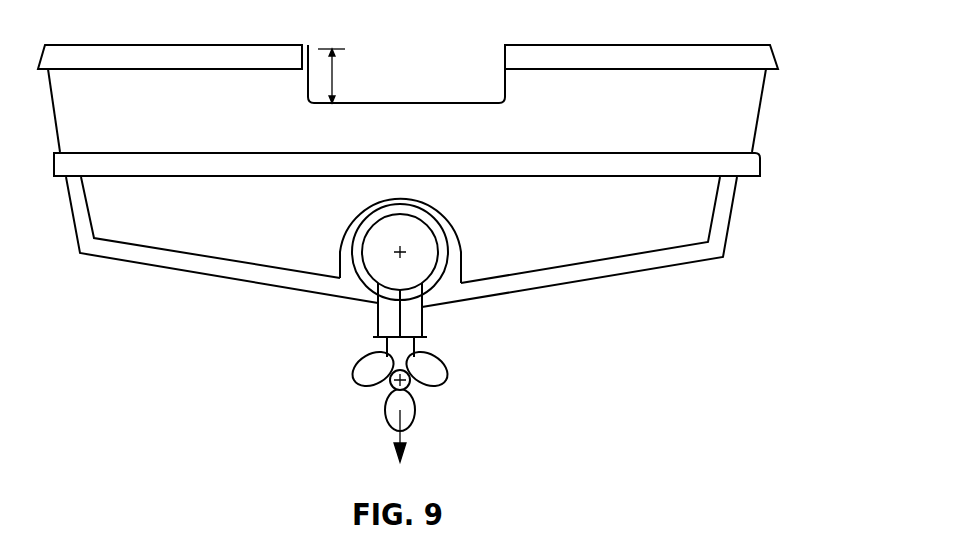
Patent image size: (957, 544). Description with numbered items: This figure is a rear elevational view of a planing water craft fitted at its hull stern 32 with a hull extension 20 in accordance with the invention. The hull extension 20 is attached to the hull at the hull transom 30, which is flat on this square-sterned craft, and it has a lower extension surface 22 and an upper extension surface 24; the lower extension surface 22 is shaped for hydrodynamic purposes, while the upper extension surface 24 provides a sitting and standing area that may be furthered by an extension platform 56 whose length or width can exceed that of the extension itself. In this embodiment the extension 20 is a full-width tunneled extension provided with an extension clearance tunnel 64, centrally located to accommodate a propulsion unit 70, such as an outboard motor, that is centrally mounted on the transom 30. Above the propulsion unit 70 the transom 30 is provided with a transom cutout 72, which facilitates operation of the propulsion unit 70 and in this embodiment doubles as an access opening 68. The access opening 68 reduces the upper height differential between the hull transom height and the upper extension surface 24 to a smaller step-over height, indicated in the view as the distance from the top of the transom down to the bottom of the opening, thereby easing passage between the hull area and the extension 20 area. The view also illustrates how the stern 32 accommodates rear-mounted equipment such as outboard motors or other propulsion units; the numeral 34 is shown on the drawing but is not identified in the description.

The hull extension 20 is at (707, 224).
The lower extension surface 22 is at (188, 258).
The upper extension surface 24 is at (190, 163).
The hull transom 30 is at (748, 132).
The hull stern 32 is at (752, 101).
The hull bottom 34 is at (603, 285).
The extension platform 56 is at (640, 151).
The extension clearance tunnel 64 is at (452, 232).
The access opening 68 is at (368, 66).
The propulsion unit 70 is at (452, 287).
The transom cutout 72 is at (432, 78).